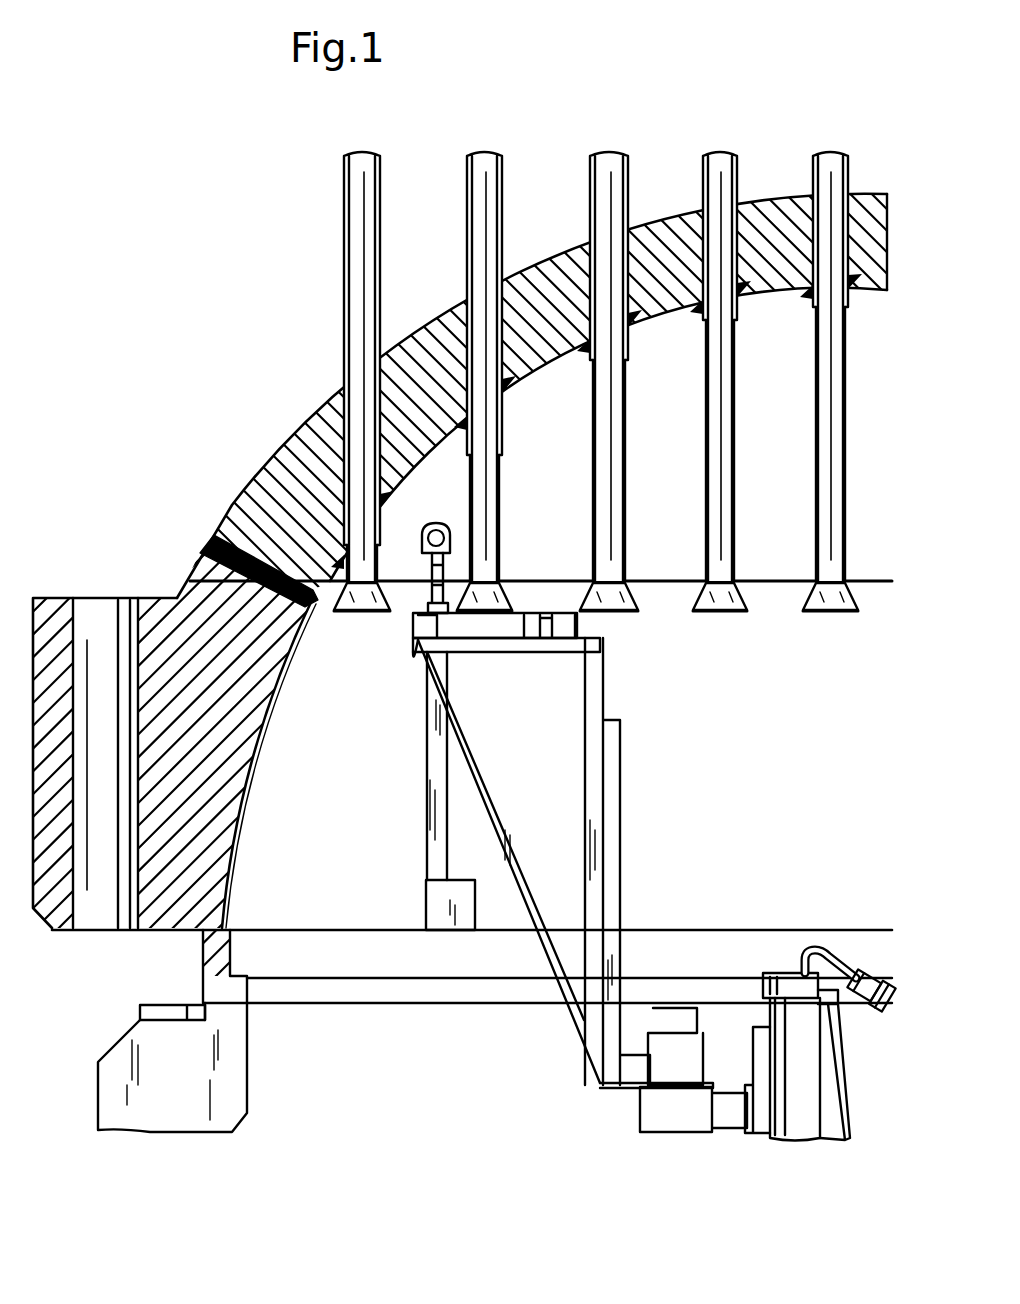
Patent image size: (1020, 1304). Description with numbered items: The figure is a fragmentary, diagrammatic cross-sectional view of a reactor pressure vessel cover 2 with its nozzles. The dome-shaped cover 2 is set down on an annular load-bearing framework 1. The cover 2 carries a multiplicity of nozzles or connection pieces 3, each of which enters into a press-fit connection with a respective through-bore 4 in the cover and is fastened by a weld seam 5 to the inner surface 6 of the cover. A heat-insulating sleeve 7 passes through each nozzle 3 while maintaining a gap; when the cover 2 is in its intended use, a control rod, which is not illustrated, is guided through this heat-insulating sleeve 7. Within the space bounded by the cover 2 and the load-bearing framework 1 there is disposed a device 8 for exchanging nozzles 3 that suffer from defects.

The annular load-bearing framework 1 is at (115, 1037).
The reactor pressure vessel cover 2 is at (268, 478).
The nozzle 3 is at (625, 172).
The through-bore 4 is at (311, 407).
The weld seam 5 is at (505, 398).
The inner surface 6 is at (413, 460).
The heat-insulating sleeve 7 is at (622, 490).
The device for exchanging nozzles 8 is at (628, 885).